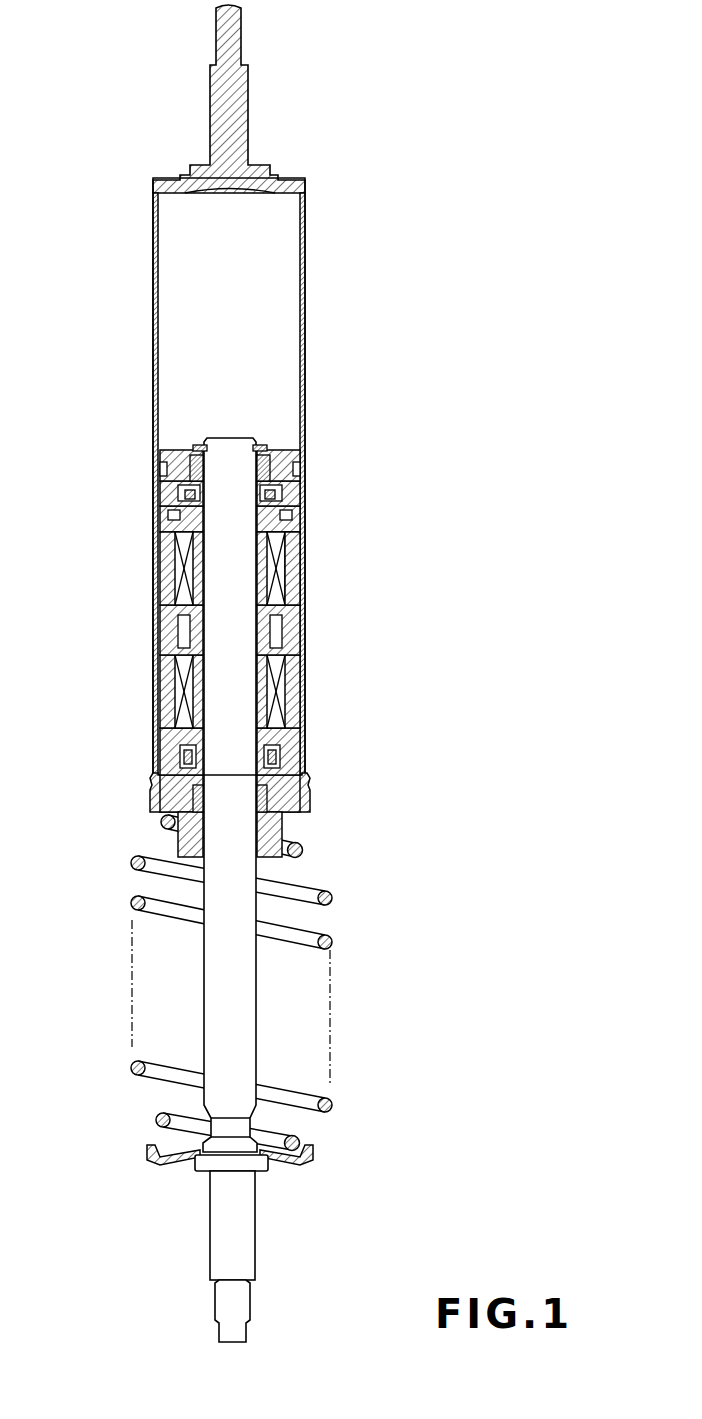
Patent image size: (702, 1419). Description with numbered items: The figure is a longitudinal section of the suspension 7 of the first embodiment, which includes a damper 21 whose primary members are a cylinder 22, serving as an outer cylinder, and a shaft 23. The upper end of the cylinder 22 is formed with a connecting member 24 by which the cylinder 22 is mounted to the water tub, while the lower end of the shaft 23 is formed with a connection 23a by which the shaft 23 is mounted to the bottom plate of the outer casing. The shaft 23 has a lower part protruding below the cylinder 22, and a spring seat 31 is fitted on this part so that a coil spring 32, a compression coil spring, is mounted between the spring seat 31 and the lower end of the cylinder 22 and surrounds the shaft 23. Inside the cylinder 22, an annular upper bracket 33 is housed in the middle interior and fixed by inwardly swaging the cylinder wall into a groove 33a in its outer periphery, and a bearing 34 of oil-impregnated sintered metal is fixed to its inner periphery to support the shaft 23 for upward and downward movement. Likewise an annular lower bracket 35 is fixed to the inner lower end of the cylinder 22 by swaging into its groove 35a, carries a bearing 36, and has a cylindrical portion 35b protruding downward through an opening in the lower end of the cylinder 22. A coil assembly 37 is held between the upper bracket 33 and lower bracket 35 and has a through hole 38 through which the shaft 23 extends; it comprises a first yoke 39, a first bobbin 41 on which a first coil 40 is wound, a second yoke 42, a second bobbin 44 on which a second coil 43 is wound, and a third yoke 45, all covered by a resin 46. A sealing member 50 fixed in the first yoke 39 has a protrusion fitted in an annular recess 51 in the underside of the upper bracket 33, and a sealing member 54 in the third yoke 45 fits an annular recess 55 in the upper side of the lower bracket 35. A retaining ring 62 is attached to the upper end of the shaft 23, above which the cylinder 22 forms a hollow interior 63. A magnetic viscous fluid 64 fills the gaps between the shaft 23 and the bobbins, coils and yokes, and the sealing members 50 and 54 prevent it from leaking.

The suspension 7 is at (345, 915).
The damper 21 is at (335, 680).
The cylinder 22 is at (308, 303).
The shaft 23 is at (258, 1004).
The connection 23a is at (240, 1302).
The connecting member 24 is at (247, 108).
The spring seat 31 is at (292, 1155).
The coil spring 32 is at (333, 1104).
The upper bracket 33 is at (283, 448).
The groove 33a is at (303, 467).
The bearing 34 is at (193, 448).
The lower bracket 35 is at (303, 816).
The groove 35a is at (303, 783).
The cylindrical portion 35b is at (300, 833).
The bearing 36 is at (152, 800).
The coil assembly 37 is at (303, 570).
The through hole 38 is at (160, 604).
The first yoke 39 is at (303, 500).
The first coil 40 is at (305, 547).
The first bobbin 41 is at (160, 540).
The second yoke 42 is at (303, 628).
The second coil 43 is at (303, 708).
The second bobbin 44 is at (157, 673).
The third yoke 45 is at (303, 758).
The resin 46 is at (157, 695).
The sealing member 50 is at (160, 465).
The annular recess 51 is at (180, 492).
The sealing member 54 is at (303, 797).
The annular recess 55 is at (157, 765).
The retaining ring 62 is at (258, 446).
The hollow interior 63 is at (182, 314).
The magnetic viscous fluid 64 is at (157, 566).